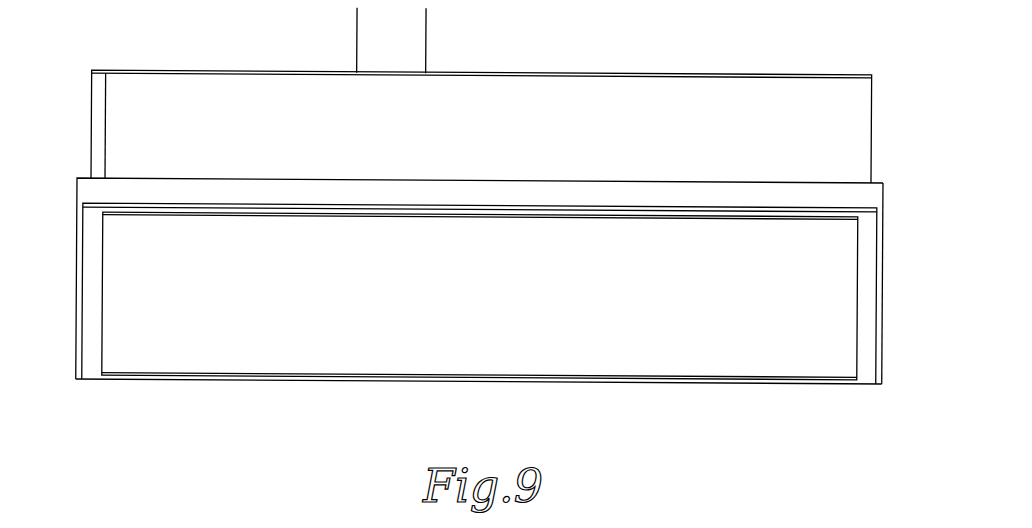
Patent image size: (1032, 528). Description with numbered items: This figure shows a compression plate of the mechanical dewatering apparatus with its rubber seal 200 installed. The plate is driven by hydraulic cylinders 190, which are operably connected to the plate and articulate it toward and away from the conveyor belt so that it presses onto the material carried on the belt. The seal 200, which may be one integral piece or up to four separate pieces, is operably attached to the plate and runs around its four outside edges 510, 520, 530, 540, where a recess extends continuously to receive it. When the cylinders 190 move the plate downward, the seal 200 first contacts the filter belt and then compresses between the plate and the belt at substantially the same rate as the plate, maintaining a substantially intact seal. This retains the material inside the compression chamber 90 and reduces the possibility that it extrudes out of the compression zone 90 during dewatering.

The compression chamber 90 is at (595, 298).
The hydraulic cylinder 190 is at (372, 48).
The seal 200 is at (95, 345).
The outside edge 510 is at (468, 192).
The outside edge 520 is at (77, 267).
The outside edge 530 is at (356, 384).
The outside edge 540 is at (883, 295).